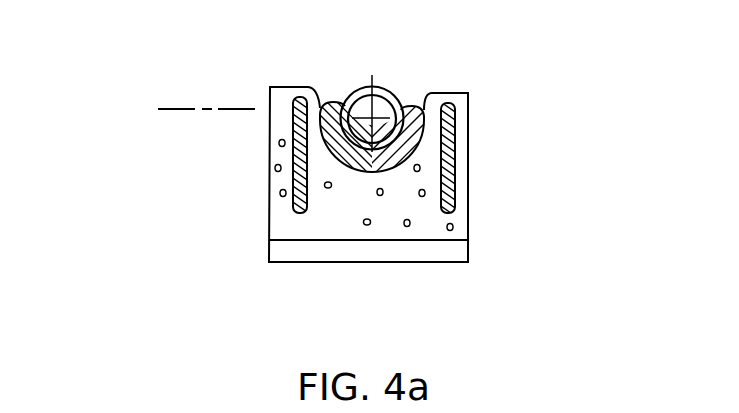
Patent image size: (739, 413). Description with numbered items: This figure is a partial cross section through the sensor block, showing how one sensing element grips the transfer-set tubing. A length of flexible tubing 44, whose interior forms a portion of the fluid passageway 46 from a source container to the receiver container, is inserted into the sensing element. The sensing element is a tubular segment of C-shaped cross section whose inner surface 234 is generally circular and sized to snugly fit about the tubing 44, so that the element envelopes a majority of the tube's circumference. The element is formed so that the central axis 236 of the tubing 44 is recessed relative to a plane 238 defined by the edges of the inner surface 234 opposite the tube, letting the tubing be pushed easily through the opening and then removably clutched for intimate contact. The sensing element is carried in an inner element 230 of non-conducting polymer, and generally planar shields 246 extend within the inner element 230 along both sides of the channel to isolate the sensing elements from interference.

The inner element 230 is at (422, 220).
The inner surface 234 is at (350, 100).
The central axis 236 is at (403, 103).
The flexible tubing 44 is at (394, 92).
The fluid passageway 46 is at (360, 100).
The shield 246 is at (460, 208).
The plane 238 is at (190, 108).